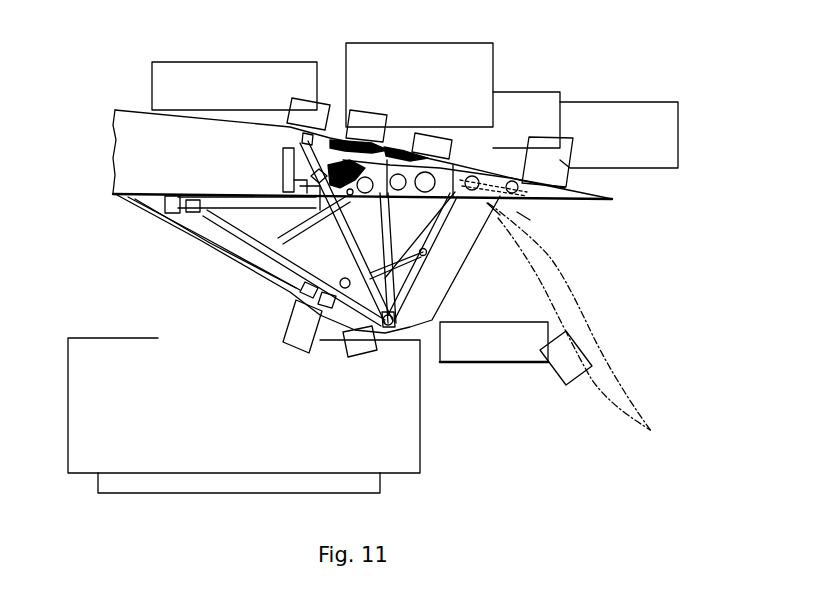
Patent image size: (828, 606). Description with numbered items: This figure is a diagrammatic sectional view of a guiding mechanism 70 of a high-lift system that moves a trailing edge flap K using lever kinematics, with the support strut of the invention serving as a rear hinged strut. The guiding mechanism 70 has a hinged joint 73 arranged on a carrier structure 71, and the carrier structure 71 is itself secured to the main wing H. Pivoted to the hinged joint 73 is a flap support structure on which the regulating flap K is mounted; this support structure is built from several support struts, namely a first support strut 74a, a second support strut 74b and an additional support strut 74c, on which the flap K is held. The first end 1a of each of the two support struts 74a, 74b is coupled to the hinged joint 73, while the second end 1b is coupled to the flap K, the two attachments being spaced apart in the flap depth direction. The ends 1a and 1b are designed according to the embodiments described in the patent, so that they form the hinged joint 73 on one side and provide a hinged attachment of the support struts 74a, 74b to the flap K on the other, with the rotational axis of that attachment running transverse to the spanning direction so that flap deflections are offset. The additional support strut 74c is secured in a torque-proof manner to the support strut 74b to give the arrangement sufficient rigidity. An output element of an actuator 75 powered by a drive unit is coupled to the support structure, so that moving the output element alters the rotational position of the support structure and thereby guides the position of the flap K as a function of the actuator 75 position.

The main wing H is at (182, 132).
The trailing edge flap K is at (545, 185).
The first end of support strut 1a is at (383, 203).
The second end of support strut 1b is at (386, 140).
The guiding mechanism 70 is at (148, 247).
The carrier structure 71 is at (245, 266).
The hinged joint 73 is at (383, 330).
The first support strut 74a is at (494, 354).
The second support strut 74b is at (443, 228).
The additional support strut 74c is at (455, 192).
The actuator 75 is at (382, 240).